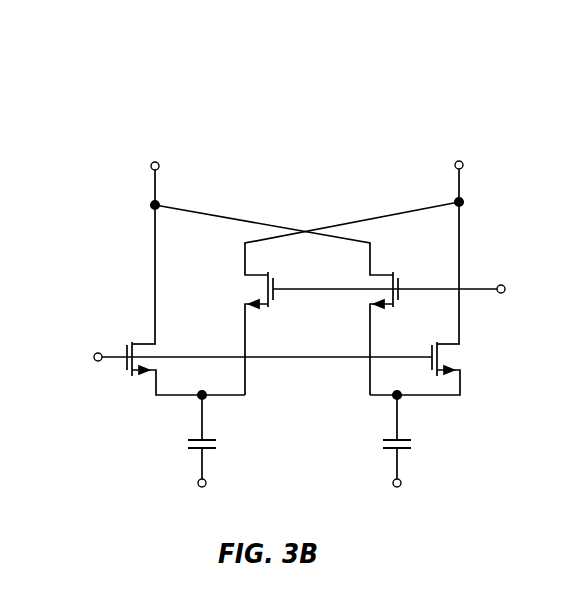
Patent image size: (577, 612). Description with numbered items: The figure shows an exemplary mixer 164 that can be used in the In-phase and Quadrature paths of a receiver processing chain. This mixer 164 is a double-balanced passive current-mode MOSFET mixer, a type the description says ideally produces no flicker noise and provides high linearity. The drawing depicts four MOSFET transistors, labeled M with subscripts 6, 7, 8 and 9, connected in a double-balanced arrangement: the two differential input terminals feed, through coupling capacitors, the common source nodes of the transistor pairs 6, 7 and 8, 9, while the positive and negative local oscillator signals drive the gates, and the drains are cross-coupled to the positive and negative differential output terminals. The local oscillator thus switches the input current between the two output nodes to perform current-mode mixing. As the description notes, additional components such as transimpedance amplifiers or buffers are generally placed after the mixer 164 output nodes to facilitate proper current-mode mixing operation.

The mixer 164 is at (433, 92).
The transistor M6 6 is at (186, 359).
The transistor M7 7 is at (242, 333).
The transistor M8 8 is at (362, 324).
The transistor M9 9 is at (430, 368).